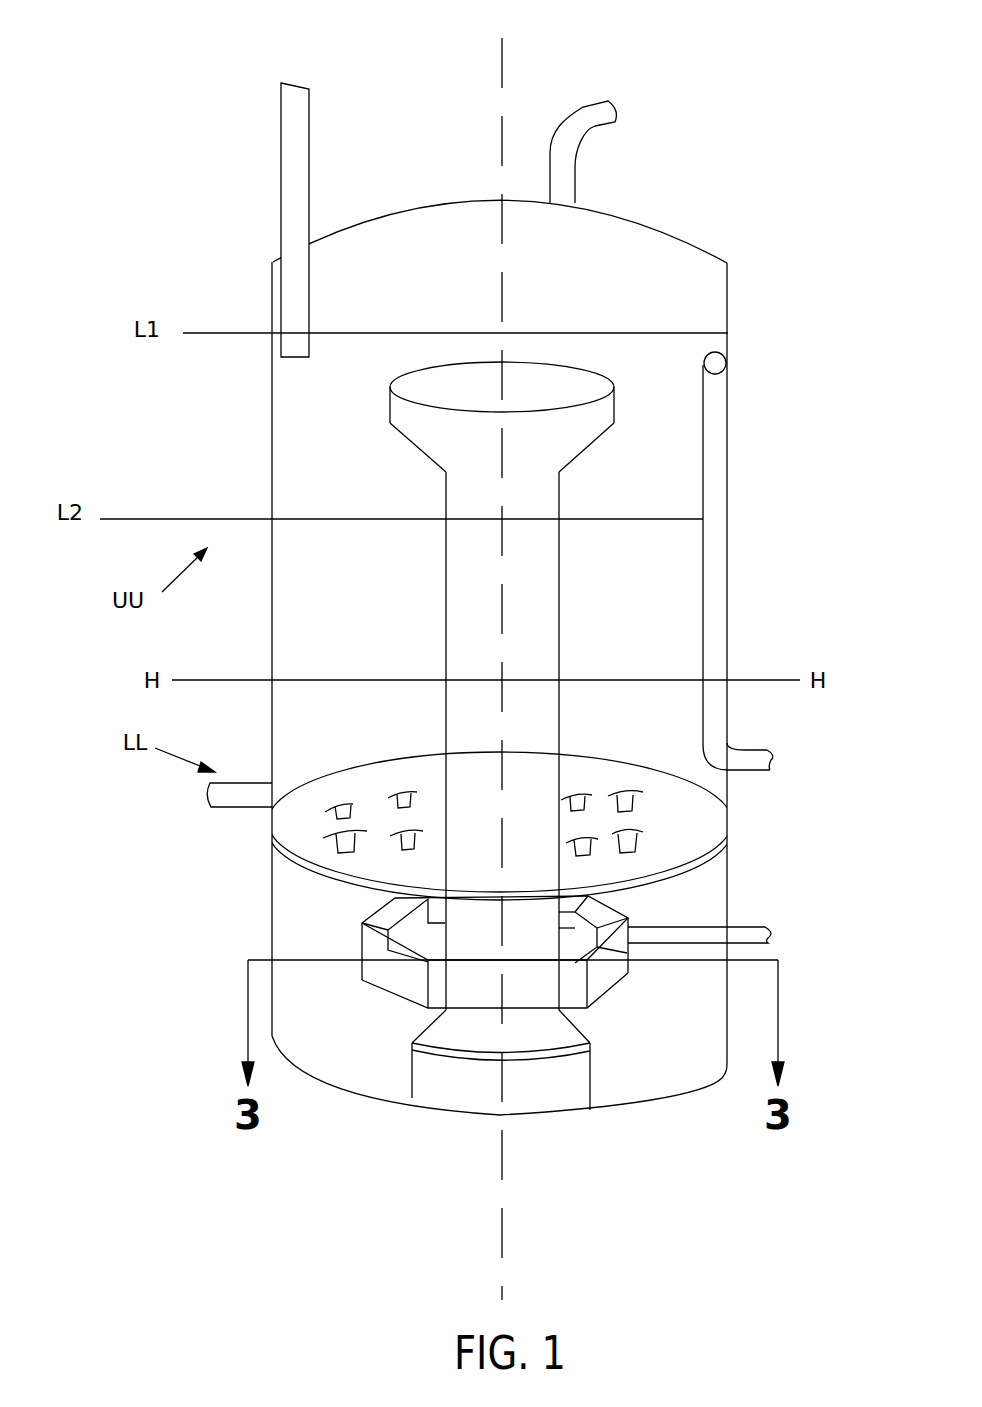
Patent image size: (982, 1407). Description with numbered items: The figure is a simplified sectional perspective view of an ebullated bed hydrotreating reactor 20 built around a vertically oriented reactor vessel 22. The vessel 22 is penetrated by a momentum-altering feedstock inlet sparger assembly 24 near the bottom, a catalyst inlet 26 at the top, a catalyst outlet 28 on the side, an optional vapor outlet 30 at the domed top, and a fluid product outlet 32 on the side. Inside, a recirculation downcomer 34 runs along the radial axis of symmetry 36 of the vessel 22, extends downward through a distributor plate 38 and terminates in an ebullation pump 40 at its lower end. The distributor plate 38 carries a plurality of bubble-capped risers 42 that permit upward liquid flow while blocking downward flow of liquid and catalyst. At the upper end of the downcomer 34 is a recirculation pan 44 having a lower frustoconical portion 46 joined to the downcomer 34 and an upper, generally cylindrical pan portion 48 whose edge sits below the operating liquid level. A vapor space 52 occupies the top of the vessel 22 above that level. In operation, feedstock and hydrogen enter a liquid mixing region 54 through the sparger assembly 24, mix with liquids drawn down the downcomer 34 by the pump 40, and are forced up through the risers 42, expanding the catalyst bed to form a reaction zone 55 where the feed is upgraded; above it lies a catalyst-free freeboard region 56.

The ebullated bed hydrotreating reactor 20 is at (552, 627).
The reactor vessel 22 is at (728, 265).
The feedstock inlet sparger assembly 24 is at (750, 927).
The catalyst inlet 26 is at (302, 92).
The catalyst outlet 28 is at (200, 797).
The vapor outlet 30 is at (585, 108).
The fluid product outlet 32 is at (767, 750).
The recirculation downcomer 34 is at (563, 560).
The radial axis of symmetry 36 is at (502, 652).
The distributor plate 38 is at (284, 858).
The ebullation pump 40 is at (557, 1098).
The bubble-capped risers 42 is at (632, 830).
The recirculation pan 44 is at (682, 360).
The frustoconical portion 46 is at (578, 456).
The cylindrical pan portion 48 is at (614, 410).
The vapor space 52 is at (411, 275).
The liquid mixing region 54 is at (654, 1053).
The reaction zone 55 is at (308, 736).
The freeboard region 56 is at (291, 480).